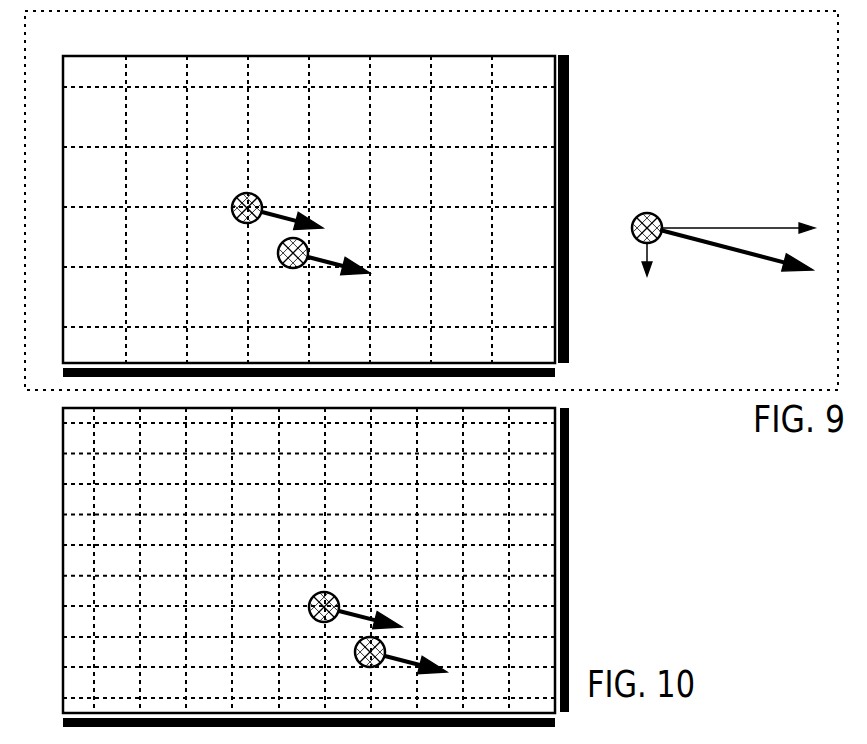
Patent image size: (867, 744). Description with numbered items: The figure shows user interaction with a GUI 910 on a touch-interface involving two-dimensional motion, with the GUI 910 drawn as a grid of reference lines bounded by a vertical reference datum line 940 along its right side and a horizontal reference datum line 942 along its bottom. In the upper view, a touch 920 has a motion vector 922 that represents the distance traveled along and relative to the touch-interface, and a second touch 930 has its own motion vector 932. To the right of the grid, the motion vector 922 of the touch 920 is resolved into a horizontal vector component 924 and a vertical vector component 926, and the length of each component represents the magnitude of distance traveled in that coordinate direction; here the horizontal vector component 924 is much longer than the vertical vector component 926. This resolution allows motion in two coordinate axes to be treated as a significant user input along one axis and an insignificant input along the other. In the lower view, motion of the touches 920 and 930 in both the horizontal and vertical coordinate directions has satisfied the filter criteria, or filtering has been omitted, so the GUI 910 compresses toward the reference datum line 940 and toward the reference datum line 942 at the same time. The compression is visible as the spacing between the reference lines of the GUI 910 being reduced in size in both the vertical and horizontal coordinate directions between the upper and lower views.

In FIG. 9, the GUI 910 is at (93, 56).
In FIG. 10, the GUI 910 is at (124, 456).
In FIG. 9, the touch 920 is at (242, 195).
In FIG. 10, the touch 920 is at (315, 594).
In FIG. 9, the motion vector 922 is at (282, 213).
In FIG. 9, the horizontal vector component 924 is at (727, 229).
In FIG. 9, the vertical vector component 926 is at (645, 267).
In FIG. 9, the touch 930 is at (288, 272).
In FIG. 10, the touch 930 is at (365, 667).
In FIG. 9, the motion vector 932 is at (332, 258).
In FIG. 9, the reference datum line 940 is at (565, 78).
In FIG. 10, the reference datum line 940 is at (569, 432).
In FIG. 9, the reference datum line 942 is at (557, 372).
In FIG. 10, the reference datum line 942 is at (557, 722).